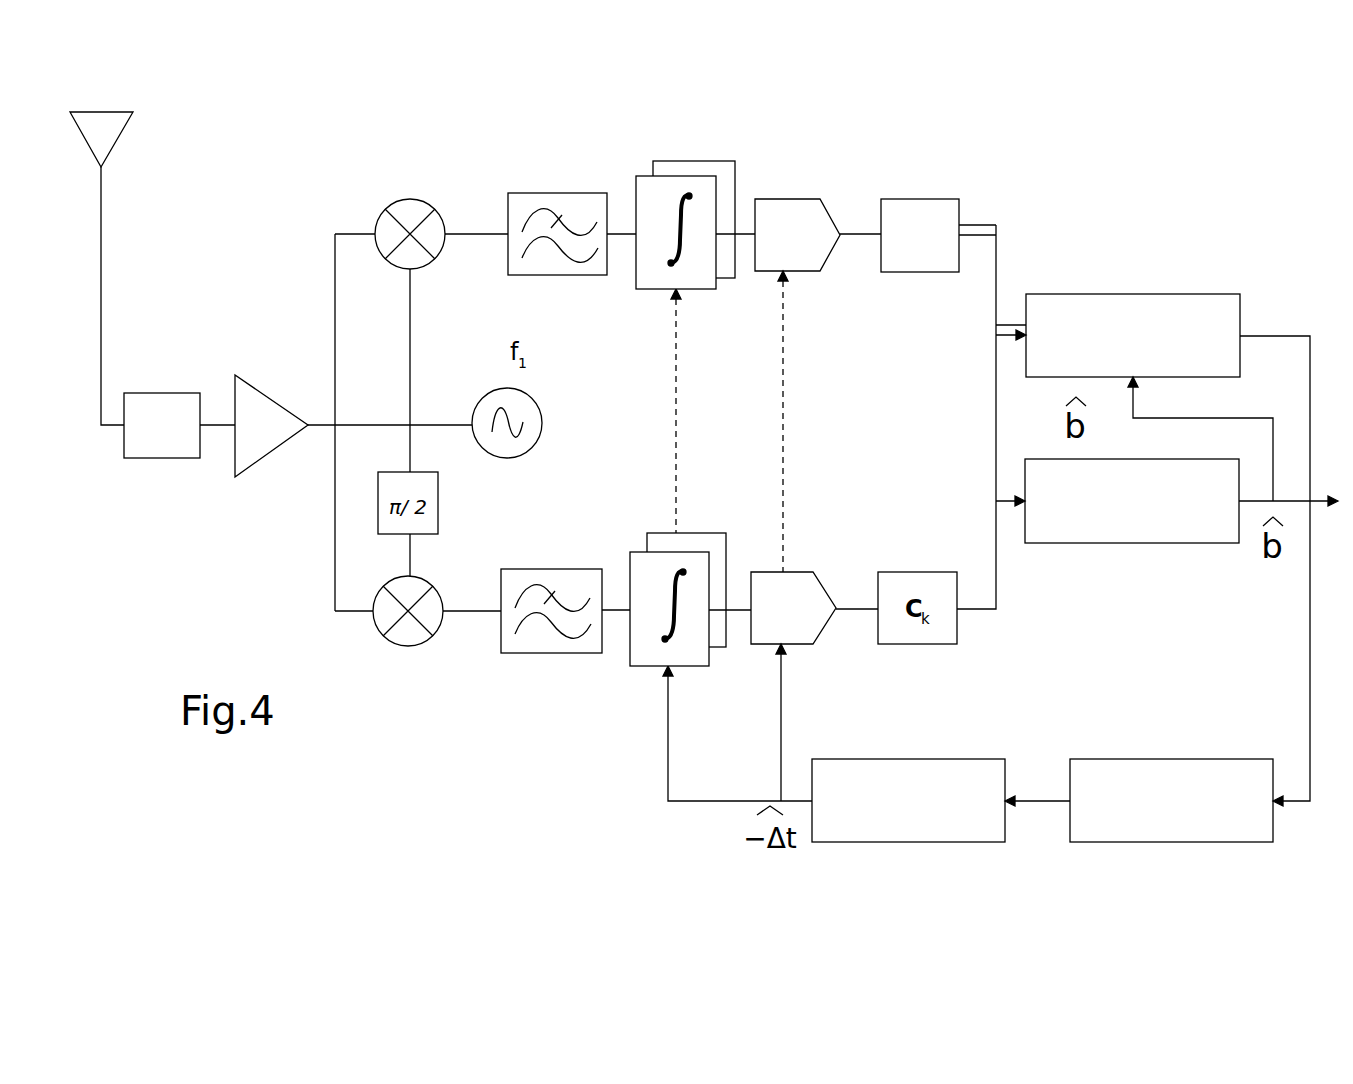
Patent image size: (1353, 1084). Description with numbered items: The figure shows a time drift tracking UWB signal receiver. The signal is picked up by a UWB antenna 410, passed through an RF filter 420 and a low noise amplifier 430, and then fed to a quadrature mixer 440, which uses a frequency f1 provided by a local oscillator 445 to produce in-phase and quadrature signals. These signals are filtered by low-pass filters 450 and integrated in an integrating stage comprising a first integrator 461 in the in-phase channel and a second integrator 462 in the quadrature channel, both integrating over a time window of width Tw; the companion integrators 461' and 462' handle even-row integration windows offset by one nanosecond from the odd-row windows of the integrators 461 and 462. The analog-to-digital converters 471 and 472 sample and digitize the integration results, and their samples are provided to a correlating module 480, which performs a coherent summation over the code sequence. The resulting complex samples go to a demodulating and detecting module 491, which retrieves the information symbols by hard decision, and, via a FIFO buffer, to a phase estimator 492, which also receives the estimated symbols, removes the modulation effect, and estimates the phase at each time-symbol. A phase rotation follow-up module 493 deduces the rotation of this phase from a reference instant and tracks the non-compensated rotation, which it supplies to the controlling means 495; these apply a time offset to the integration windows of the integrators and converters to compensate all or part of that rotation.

The UWB antenna 410 is at (117, 112).
The RF filter 420 is at (158, 392).
The low noise amplifier 430 is at (268, 393).
The quadrature mixer 440 is at (418, 177).
The local oscillator 445 is at (503, 458).
The low-pass filters 450 is at (567, 173).
The first integrator 461 is at (676, 192).
The first integrator (even-row) 461' is at (709, 185).
The second integrator 462 is at (647, 644).
The second integrator (even-row) 462' is at (686, 635).
The analog-to-digital converter 471 is at (770, 198).
The analog-to-digital converter 472 is at (807, 648).
The correlating module 480 is at (932, 168).
The demodulating and detecting module 491 is at (1133, 543).
The phase estimator 492 is at (1082, 293).
The phase rotation follow-up module 493 is at (1177, 842).
The controlling means 495 is at (937, 842).